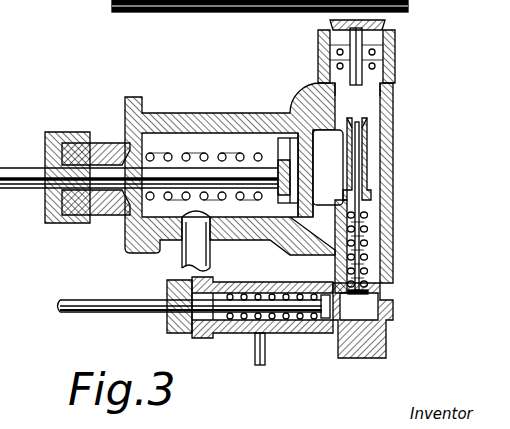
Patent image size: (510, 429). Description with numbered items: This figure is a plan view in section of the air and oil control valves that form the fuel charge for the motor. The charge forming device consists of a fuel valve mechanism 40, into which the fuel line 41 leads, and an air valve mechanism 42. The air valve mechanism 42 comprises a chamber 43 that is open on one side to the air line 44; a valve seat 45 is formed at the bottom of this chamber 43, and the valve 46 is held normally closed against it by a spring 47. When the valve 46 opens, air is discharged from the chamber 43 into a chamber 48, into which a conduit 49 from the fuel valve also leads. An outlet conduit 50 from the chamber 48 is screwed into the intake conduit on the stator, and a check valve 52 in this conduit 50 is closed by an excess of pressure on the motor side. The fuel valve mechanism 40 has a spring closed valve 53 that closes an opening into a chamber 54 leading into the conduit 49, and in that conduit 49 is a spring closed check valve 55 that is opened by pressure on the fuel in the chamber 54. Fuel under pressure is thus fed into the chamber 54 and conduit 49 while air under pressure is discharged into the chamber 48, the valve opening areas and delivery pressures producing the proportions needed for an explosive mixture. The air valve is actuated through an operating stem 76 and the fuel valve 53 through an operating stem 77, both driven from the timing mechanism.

The fuel valve mechanism 40 is at (312, 333).
The fuel line 41 is at (266, 358).
The air valve mechanism 42 is at (270, 117).
The chamber 43 is at (204, 167).
The air line 44 is at (182, 262).
The valve seat 45 is at (296, 112).
The valve 46 is at (262, 125).
The spring 47 is at (166, 157).
The chamber 48 is at (328, 167).
The conduit 49 is at (362, 171).
The outlet conduit 50 is at (388, 93).
The check valve 52 is at (398, 25).
The spring closed valve 53 is at (322, 293).
The chamber 54 is at (393, 302).
The spring closed check valve 55 is at (363, 121).
The operating stem 76 is at (145, 194).
The operating stem 77 is at (118, 312).